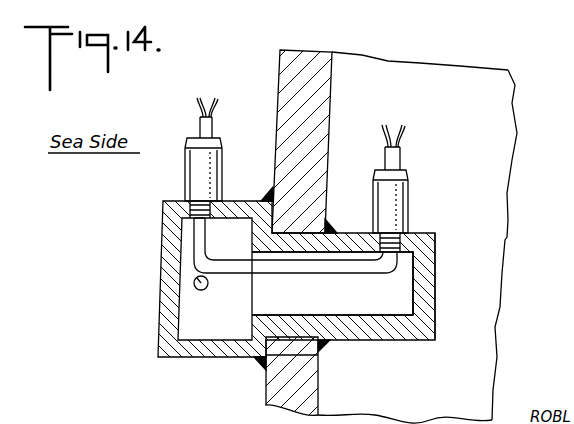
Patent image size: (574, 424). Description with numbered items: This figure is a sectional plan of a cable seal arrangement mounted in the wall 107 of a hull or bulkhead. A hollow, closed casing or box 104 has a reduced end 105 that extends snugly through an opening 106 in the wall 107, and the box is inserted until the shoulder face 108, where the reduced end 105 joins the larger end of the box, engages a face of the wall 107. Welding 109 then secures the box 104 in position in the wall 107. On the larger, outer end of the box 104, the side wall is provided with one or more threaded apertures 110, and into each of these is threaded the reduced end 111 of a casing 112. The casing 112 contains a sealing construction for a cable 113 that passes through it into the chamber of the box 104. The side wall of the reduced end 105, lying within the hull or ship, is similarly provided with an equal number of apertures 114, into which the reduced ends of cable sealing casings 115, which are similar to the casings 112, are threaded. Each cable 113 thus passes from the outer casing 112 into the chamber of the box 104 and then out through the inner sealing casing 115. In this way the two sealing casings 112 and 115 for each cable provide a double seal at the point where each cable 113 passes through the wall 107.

The box 104 is at (168, 238).
The reduced end 105 is at (407, 343).
The opening 106 is at (307, 317).
The wall 107 is at (315, 62).
The shoulder face 108 is at (328, 353).
The welding 109 is at (328, 224).
The threaded apertures 110 is at (213, 212).
The reduced end 111 is at (193, 222).
The casing 112 is at (222, 156).
The cable 113 is at (313, 273).
The apertures 114 is at (400, 243).
The cable sealing casings 115 is at (408, 188).